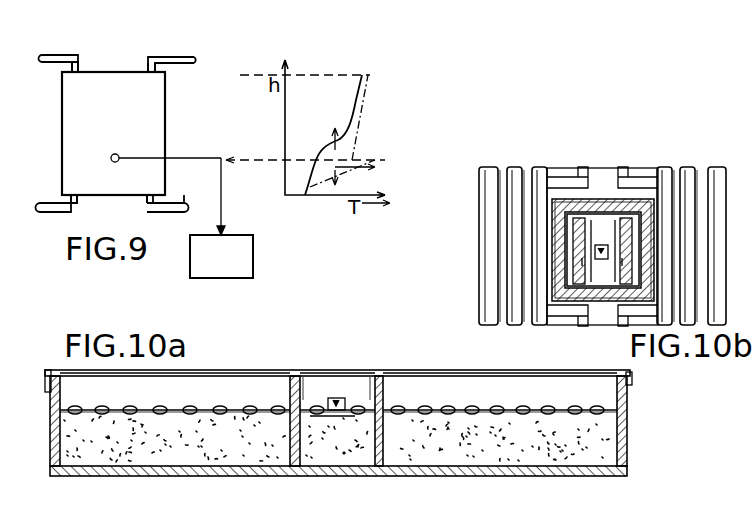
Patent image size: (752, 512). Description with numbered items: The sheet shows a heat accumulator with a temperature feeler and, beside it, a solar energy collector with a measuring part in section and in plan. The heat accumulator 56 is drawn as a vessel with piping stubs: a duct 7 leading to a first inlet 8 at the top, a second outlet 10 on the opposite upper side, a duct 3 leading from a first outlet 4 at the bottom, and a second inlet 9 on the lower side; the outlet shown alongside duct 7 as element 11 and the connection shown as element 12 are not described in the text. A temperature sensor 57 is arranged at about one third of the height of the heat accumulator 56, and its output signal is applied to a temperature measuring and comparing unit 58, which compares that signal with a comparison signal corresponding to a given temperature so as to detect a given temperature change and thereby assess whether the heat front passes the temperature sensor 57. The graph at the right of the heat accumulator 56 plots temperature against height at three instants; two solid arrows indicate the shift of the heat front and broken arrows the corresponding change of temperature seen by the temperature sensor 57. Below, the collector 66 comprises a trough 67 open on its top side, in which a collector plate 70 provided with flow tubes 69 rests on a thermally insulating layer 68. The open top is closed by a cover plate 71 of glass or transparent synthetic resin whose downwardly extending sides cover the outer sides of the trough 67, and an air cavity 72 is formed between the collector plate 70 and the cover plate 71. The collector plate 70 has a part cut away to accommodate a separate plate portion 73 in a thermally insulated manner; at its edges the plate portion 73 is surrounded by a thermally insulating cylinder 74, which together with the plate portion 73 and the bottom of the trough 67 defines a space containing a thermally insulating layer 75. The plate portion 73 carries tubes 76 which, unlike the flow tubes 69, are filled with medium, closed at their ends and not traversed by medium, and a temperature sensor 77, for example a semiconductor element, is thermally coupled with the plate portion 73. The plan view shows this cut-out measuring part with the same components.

In FIG. 9, the duct 3 is at (62, 203).
In FIG. 9, the first outlet 4 is at (77, 201).
In FIG. 9, the duct 7 is at (65, 58).
In FIG. 9, the first inlet 8 is at (78, 70).
In FIG. 9, the second inlet 9 is at (147, 203).
In FIG. 9, the second outlet 10 is at (152, 70).
In FIG. 9, the outlet pipe 11 is at (191, 59).
In FIG. 9, the inlet pipe 12 is at (154, 201).
In FIG. 9, the heat accumulator 56 is at (127, 127).
In FIG. 9, the temperature sensor 57 is at (113, 157).
In FIG. 9, the temperature measuring and comparing unit 58 is at (230, 259).
In FIG. 10A, the collector 66 is at (622, 442).
In FIG. 10A, the trough 67 is at (568, 475).
In FIG. 10A, the thermally insulating layer 68 is at (202, 440).
In FIG. 10A, the flow tubes 69 is at (278, 406).
In FIG. 10B, the flow tubes 69 is at (517, 285).
In FIG. 10A, the collector plate 70 is at (235, 406).
In FIG. 10B, the collector plate 70 is at (500, 212).
In FIG. 10A, the cover plate 71 is at (205, 372).
In FIG. 10A, the air cavity 72 is at (202, 391).
In FIG. 10B, the air cavity 72 is at (612, 238).
In FIG. 10A, the plate portion 73 is at (327, 402).
In FIG. 10B, the plate portion 73 is at (601, 214).
In FIG. 10A, the thermally insulating cylinder 74 is at (370, 400).
In FIG. 10B, the thermally insulating cylinder 74 is at (557, 243).
In FIG. 10A, the thermally insulating layer 75 is at (350, 460).
In FIG. 10A, the tubes 76 is at (355, 418).
In FIG. 10B, the tubes 76 is at (624, 262).
In FIG. 10A, the temperature sensor 77 is at (337, 398).